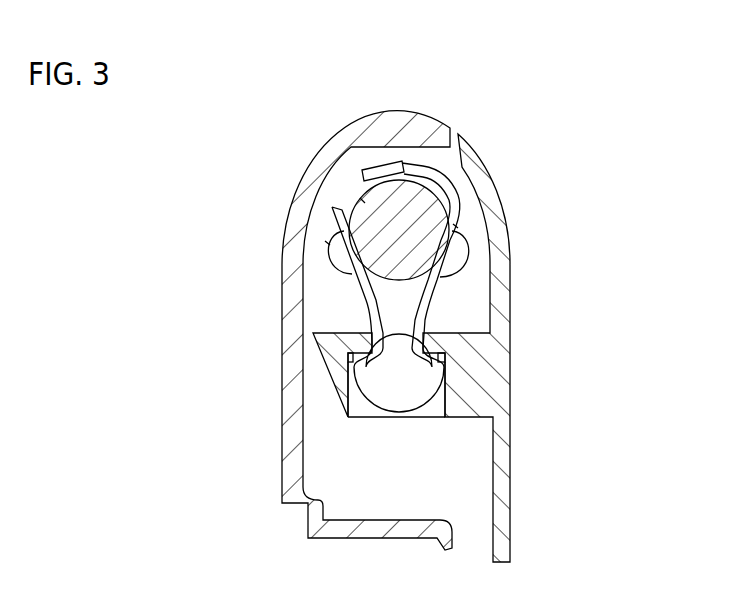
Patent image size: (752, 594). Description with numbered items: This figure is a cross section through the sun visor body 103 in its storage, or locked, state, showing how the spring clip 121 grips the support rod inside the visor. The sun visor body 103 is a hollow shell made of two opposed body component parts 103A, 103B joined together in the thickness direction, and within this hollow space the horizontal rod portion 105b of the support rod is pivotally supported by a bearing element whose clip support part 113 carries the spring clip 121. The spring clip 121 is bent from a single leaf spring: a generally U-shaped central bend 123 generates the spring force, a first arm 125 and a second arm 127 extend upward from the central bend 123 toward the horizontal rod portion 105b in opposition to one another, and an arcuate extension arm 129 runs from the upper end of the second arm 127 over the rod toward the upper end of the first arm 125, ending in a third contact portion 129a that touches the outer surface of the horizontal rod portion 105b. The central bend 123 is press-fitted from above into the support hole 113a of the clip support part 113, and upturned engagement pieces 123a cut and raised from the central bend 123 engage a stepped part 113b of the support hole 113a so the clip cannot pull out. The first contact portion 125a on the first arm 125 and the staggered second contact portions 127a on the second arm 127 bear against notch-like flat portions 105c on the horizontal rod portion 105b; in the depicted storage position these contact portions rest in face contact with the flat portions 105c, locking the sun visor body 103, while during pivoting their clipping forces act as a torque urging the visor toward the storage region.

The sun visor body 103 is at (398, 297).
The body component part 103A is at (500, 427).
The body component part 103B is at (290, 450).
The horizontal rod portion 105b is at (360, 198).
The flat portions 105c is at (327, 243).
The clip support part 113 is at (335, 366).
The support hole 113a is at (358, 409).
The stepped part 113b is at (348, 356).
The spring clip 121 is at (465, 196).
The central bend 123 is at (439, 390).
The engagement pieces 123a is at (444, 357).
The first arm 125 is at (366, 298).
The first contact portion 125a is at (330, 262).
The second arm 127 is at (434, 293).
The second contact portions 127a is at (465, 256).
The extension arm 129 is at (458, 166).
The third contact portion 129a is at (380, 167).